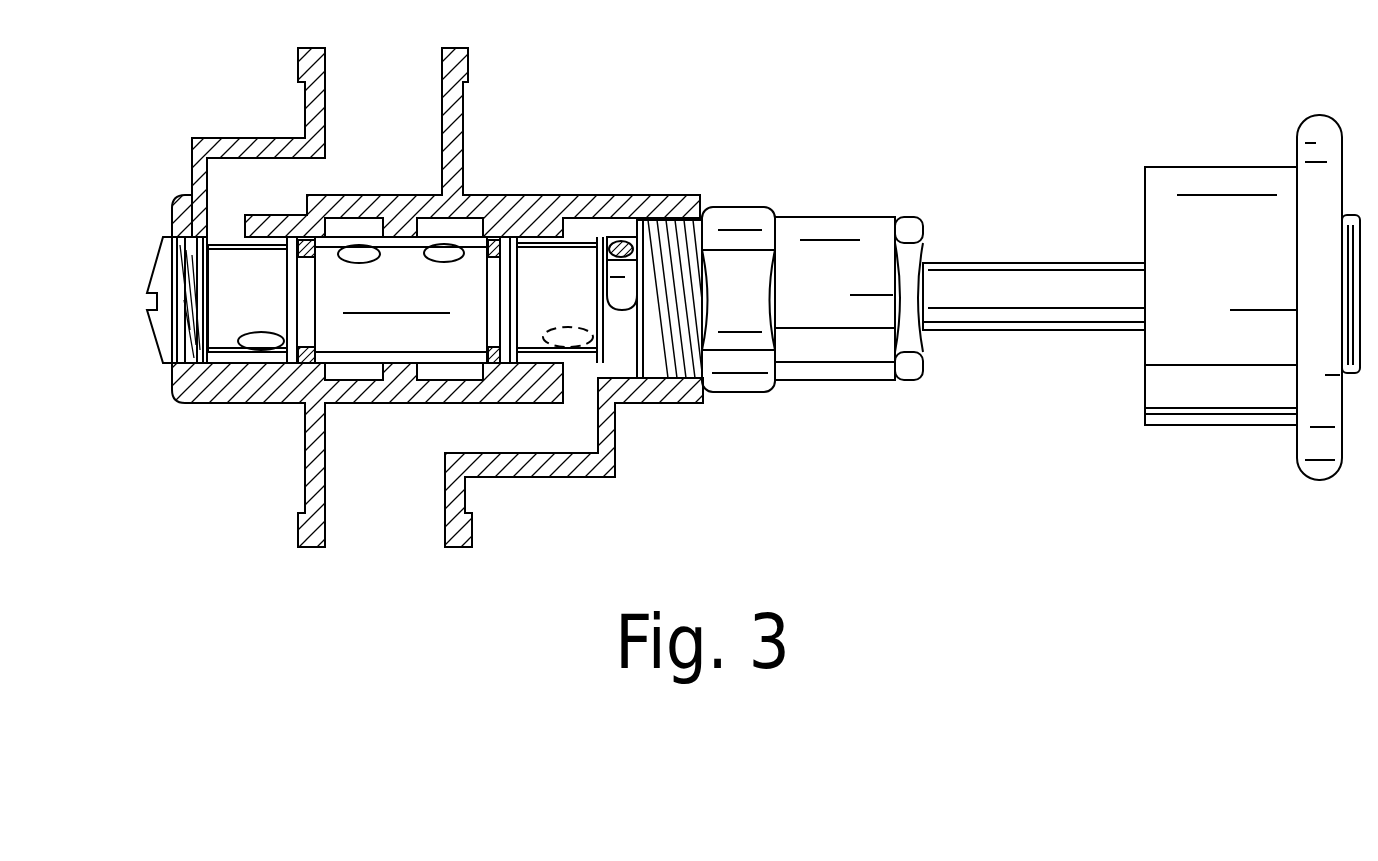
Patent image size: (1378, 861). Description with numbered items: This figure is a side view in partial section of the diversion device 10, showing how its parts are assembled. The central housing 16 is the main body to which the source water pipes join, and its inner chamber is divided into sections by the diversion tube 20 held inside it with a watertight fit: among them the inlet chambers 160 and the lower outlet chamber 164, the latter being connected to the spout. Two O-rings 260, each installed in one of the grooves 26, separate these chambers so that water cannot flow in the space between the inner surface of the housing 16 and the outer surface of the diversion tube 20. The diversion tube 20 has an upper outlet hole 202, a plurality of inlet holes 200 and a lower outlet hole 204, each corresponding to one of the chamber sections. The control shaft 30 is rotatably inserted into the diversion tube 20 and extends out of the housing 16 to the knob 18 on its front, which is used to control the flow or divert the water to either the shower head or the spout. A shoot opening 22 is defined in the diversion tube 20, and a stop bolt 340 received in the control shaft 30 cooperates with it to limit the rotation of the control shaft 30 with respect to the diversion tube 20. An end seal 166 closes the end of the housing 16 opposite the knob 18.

The valve assembly 10 is at (220, 560).
The housing 16 is at (200, 396).
The knob 18 is at (1238, 178).
The diversion tube 20 is at (358, 342).
The shoot opening 22 is at (624, 242).
The grooves 26 is at (498, 320).
The control shaft 30 is at (990, 297).
The inlet chambers 160 is at (443, 373).
The lower outlet chamber 164 is at (228, 232).
The end seal 166 is at (162, 320).
The inlet holes 200 is at (450, 260).
The upper outlet hole 202 is at (262, 343).
The lower outlet hole 204 is at (575, 345).
The O-rings 260 is at (473, 276).
The stop bolt 340 is at (624, 238).